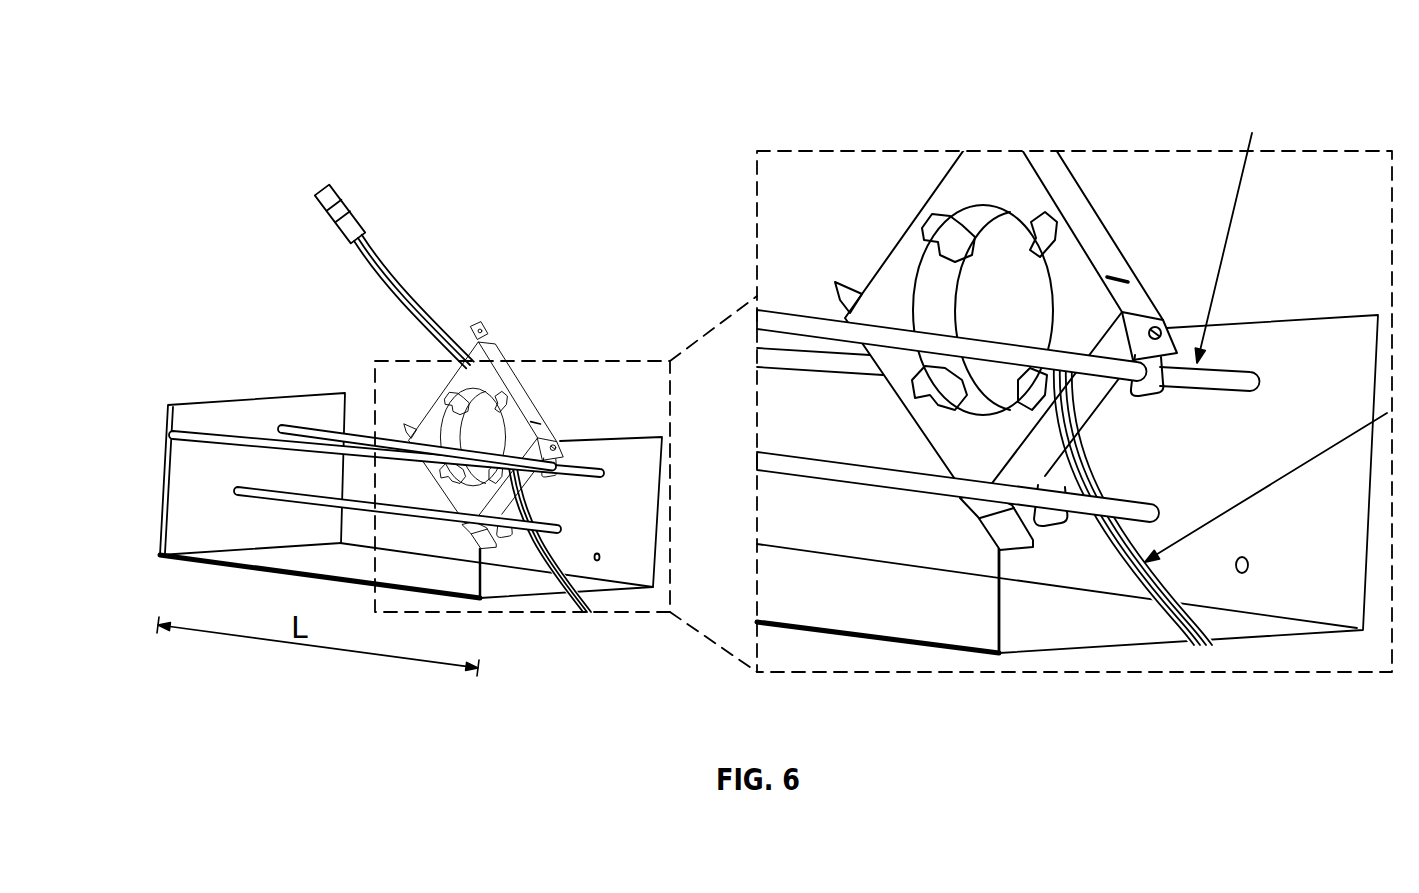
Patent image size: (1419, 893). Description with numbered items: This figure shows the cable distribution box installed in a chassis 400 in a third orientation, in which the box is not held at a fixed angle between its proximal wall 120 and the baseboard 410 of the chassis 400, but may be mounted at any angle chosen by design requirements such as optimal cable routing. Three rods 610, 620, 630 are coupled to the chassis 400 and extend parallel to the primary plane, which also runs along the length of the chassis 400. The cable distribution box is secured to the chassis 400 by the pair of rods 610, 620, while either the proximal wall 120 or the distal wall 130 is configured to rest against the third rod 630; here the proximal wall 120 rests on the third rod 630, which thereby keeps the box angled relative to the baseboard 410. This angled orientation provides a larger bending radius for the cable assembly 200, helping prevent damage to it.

The proximal wall 120 is at (978, 515).
The distal wall 130 is at (1100, 263).
The cable assembly 200 is at (413, 302).
The chassis 400 is at (610, 456).
The baseboard 410 is at (1050, 655).
The rod 610 is at (383, 447).
The rod 620 is at (410, 513).
The third rod 630 is at (237, 440).